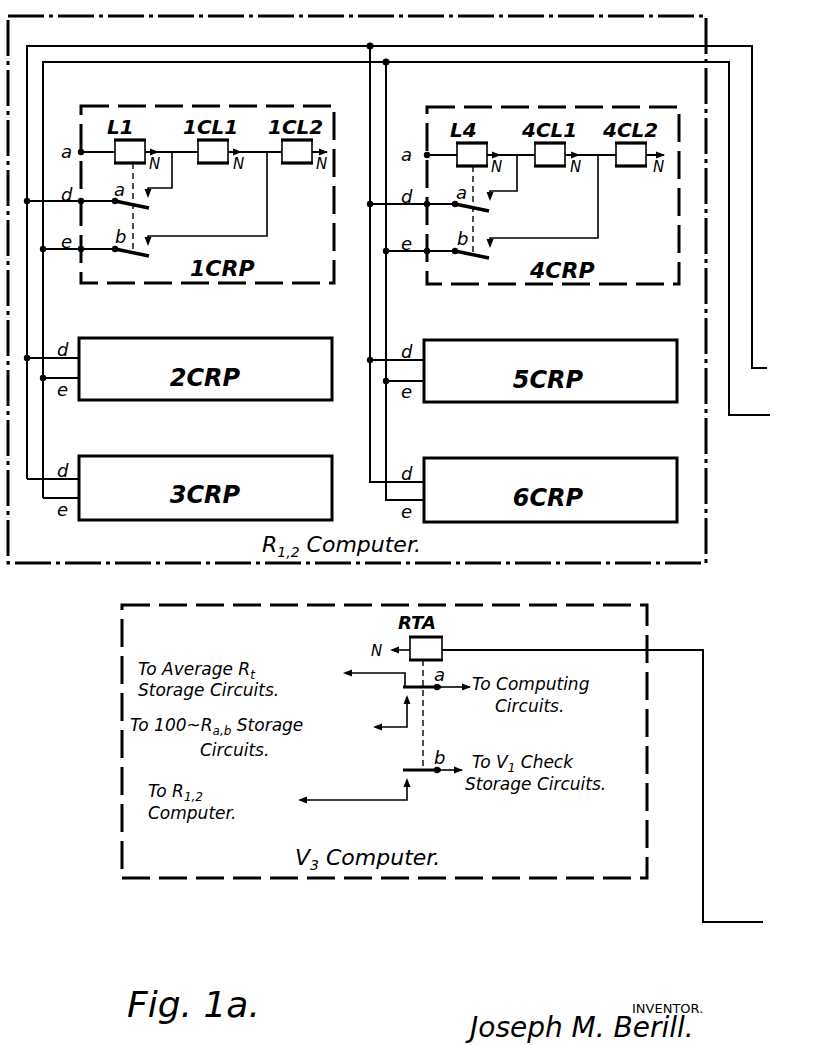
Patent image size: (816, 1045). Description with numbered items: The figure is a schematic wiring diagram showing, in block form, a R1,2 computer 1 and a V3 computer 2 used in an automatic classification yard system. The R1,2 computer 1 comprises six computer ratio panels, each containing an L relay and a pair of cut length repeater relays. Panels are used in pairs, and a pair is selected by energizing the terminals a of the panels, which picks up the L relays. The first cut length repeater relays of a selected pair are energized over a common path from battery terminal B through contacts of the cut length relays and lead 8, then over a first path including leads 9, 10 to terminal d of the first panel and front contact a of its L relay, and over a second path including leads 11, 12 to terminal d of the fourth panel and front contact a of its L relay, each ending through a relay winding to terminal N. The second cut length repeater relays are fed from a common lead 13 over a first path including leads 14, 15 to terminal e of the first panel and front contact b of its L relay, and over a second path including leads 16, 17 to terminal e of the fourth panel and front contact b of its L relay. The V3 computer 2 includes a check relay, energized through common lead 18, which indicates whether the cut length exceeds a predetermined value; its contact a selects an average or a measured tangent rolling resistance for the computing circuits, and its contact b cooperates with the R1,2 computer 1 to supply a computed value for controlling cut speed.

The R1,2 computer 1 is at (582, 558).
The V3 computer 2 is at (586, 863).
The lead 8 is at (765, 370).
The lead 9 is at (266, 48).
The lead 10 is at (48, 204).
The lead 11 is at (369, 86).
The lead 12 is at (402, 207).
The common lead 13 is at (762, 418).
The lead 14 is at (283, 66).
The lead 15 is at (58, 252).
The lead 16 is at (388, 84).
The lead 17 is at (412, 256).
The common lead 18 is at (752, 920).